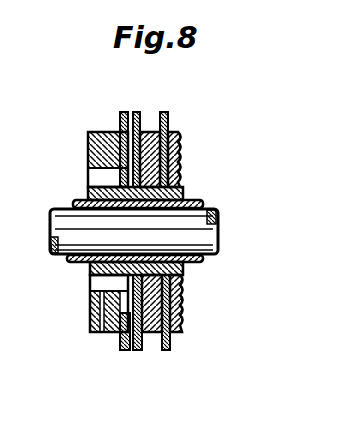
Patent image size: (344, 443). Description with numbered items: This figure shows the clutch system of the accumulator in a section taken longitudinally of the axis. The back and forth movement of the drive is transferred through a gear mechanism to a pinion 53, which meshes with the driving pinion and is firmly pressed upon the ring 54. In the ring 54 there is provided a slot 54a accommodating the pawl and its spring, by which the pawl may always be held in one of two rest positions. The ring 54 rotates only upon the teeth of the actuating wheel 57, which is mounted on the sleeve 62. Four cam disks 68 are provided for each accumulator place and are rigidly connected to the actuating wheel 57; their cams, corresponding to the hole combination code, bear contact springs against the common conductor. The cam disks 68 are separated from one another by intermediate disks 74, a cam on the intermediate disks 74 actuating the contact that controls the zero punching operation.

The pinion 53 is at (125, 350).
The ring 54 is at (90, 307).
The slot 54a is at (107, 332).
The actuating wheel 57 is at (103, 180).
The sleeve 62 is at (75, 263).
The cam disk 68 is at (173, 333).
The intermediate disk 74 is at (168, 120).